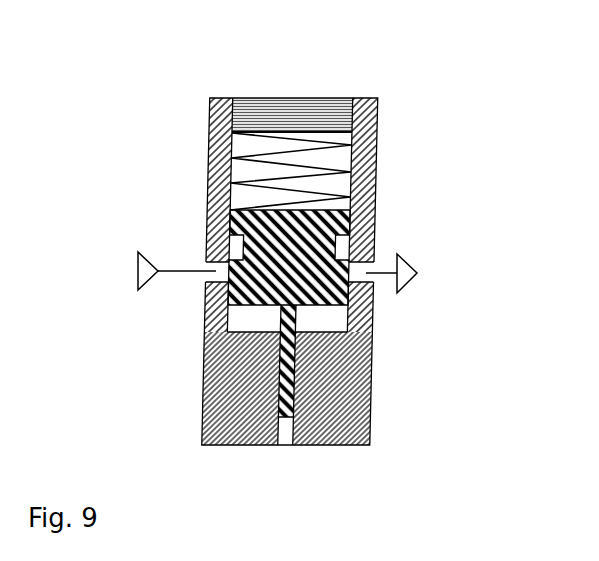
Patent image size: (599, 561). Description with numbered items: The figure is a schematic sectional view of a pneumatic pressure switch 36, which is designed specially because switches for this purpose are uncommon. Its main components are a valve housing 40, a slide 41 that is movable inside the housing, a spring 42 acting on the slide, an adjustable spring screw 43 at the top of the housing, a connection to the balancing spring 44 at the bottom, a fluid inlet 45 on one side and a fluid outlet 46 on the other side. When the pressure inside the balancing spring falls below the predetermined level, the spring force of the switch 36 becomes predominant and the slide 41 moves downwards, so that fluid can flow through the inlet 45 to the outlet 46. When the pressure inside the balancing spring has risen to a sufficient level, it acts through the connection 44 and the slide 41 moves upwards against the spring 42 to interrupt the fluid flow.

The pressure switch 36 is at (181, 372).
The valve housing 40 is at (208, 212).
The slide 41 is at (342, 297).
The spring 42 is at (238, 177).
The adjustable spring screw 43 is at (326, 116).
The connection to the balancing spring 44 is at (287, 445).
The fluid inlet 45 is at (128, 271).
The fluid outlet 46 is at (425, 273).